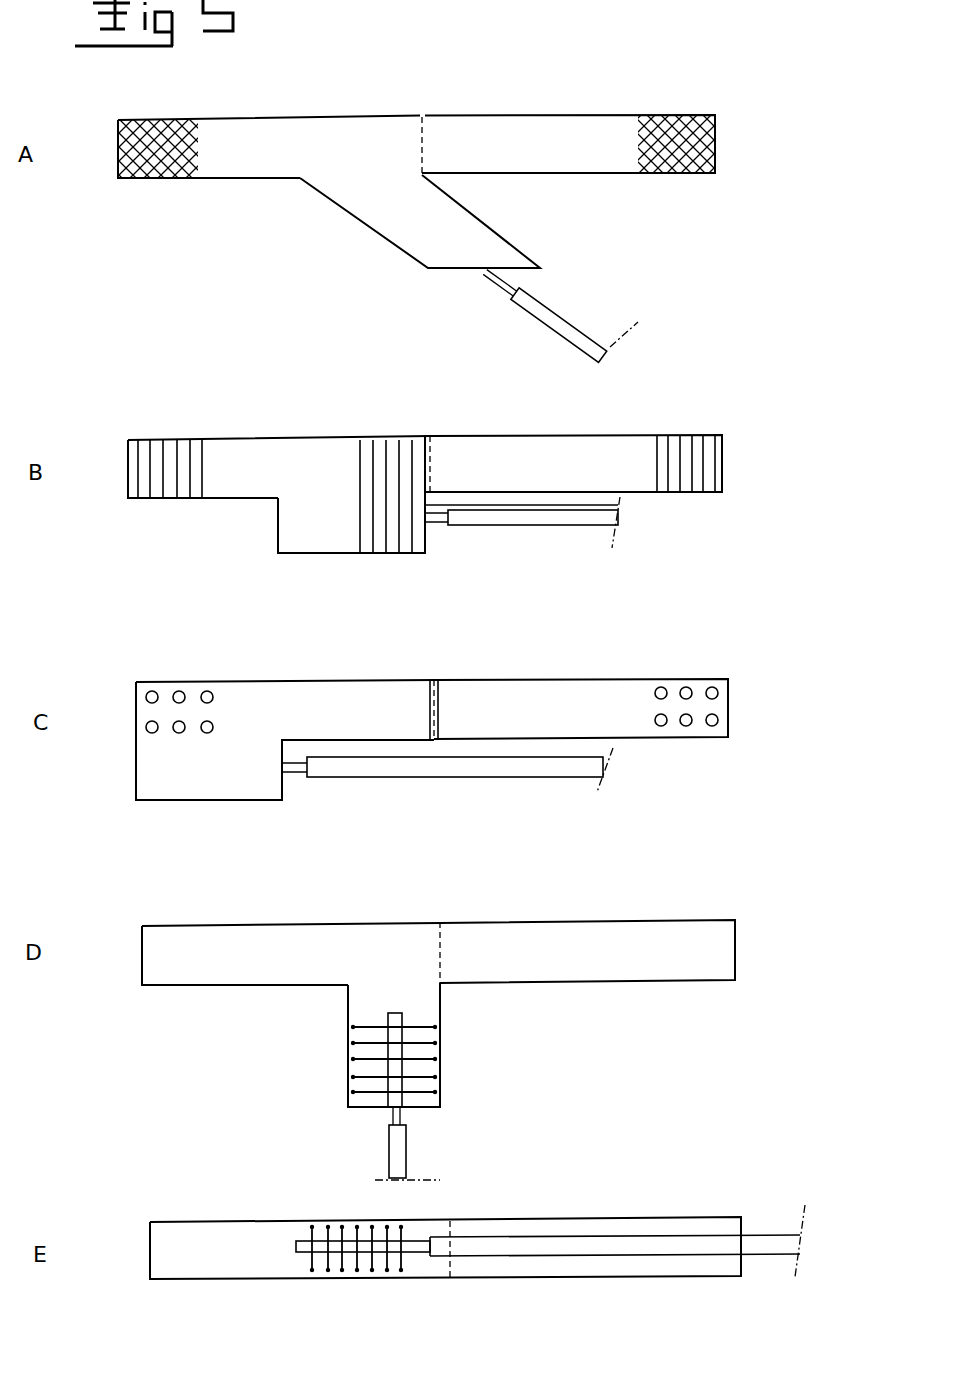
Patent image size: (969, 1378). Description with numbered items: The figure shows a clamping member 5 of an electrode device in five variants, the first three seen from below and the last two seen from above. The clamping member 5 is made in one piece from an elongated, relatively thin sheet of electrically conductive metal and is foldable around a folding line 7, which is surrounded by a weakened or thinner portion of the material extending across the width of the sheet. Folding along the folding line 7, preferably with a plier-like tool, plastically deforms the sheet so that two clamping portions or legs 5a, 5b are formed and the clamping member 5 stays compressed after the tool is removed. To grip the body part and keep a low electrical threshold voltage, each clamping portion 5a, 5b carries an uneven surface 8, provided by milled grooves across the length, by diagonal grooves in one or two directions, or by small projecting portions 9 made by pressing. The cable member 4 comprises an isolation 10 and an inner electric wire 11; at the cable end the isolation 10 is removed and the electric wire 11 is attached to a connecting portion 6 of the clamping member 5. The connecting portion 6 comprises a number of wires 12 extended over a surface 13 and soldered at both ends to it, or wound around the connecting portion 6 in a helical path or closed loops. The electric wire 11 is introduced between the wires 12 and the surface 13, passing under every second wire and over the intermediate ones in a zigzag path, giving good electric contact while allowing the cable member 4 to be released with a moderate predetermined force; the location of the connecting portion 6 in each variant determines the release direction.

The cable member 4 is at (622, 308).
The clamping member 5 is at (429, 664).
The clamping portion 5a is at (226, 130).
The clamping portion 5b is at (583, 130).
The connecting portion 6 is at (360, 214).
The folding line 7 is at (423, 116).
The uneven surface 8 is at (160, 176).
The projecting portions 9 is at (205, 694).
The isolation 10 is at (560, 321).
The electric wire 11 is at (500, 280).
The wires 12 is at (385, 451).
The surface 13 is at (420, 1035).